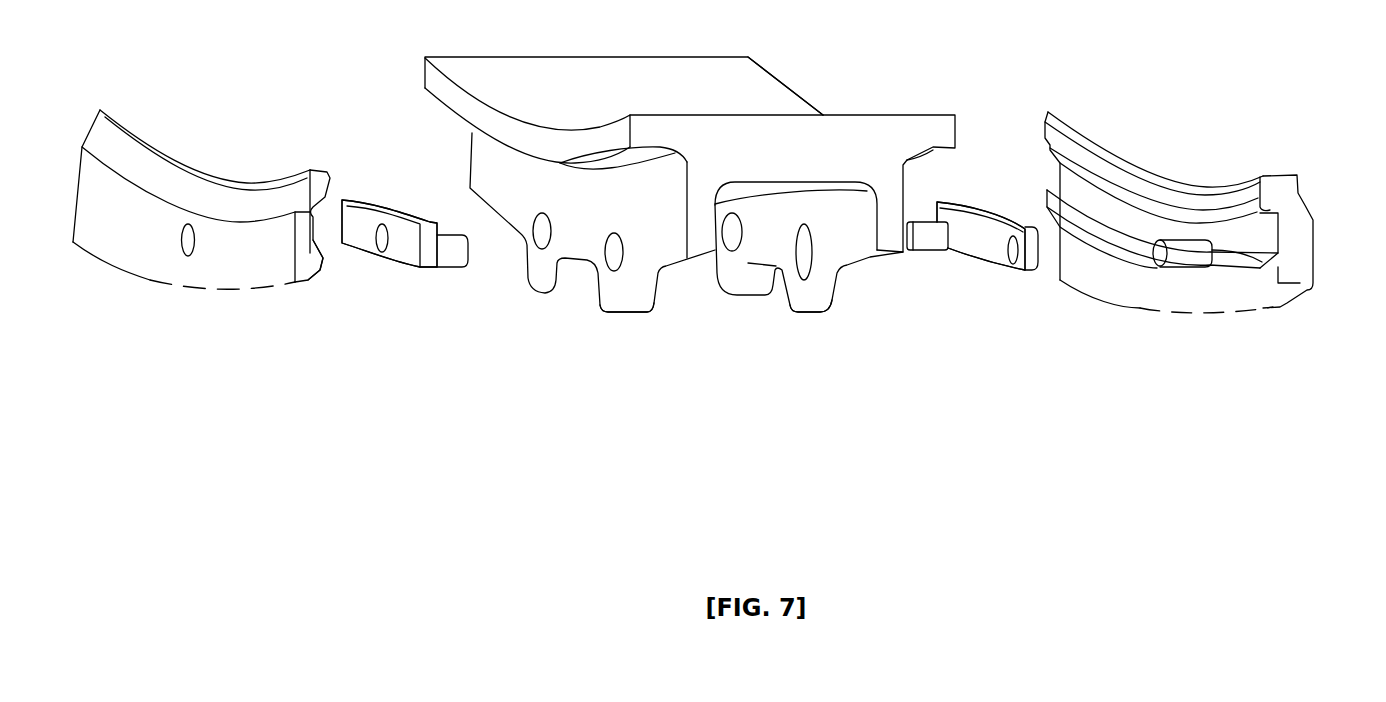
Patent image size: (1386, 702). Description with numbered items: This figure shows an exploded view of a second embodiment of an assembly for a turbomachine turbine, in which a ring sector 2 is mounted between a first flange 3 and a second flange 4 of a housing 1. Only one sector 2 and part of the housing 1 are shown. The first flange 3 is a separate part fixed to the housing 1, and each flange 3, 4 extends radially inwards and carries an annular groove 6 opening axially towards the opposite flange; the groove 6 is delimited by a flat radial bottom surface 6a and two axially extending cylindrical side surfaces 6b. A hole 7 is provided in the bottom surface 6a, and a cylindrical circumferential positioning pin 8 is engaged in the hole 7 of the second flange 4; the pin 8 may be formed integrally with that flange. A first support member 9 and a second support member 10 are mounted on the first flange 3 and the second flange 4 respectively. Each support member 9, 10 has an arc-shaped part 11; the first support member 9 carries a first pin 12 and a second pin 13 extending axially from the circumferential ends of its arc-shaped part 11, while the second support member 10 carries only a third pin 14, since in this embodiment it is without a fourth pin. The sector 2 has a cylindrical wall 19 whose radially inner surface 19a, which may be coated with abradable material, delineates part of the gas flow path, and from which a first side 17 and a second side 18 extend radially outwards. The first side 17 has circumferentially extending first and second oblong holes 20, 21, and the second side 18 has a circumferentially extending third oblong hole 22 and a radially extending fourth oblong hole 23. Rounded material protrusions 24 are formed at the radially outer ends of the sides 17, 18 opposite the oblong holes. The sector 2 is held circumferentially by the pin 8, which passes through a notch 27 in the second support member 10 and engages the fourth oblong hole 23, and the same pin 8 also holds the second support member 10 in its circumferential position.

The housing 1 is at (1161, 184).
The sector 2 is at (672, 206).
The first flange 3 is at (163, 190).
The second flange 4 is at (1103, 147).
The annular groove 6 is at (313, 240).
The bottom surface 6a is at (1263, 235).
The side surface 6b is at (1277, 207).
The hole 7 is at (1235, 257).
The circumferential positioning pin 8 is at (1183, 255).
The first support member 9 is at (408, 220).
The second support member 10 is at (972, 216).
The arc-shaped part 11 is at (398, 243).
The first pin 12 is at (378, 236).
The second pin 13 is at (450, 255).
The third pin 14 is at (925, 235).
The first side 17 is at (592, 252).
The second side 18 is at (809, 277).
The cylindrical wall 19 is at (445, 95).
The radially inner surface 19a is at (767, 98).
The first oblong hole 20 is at (543, 240).
The second oblong hole 21 is at (613, 267).
The third oblong hole 22 is at (733, 240).
The fourth oblong hole 23 is at (803, 273).
The rounded material protrusion 24 is at (635, 298).
The notch 27 is at (1013, 267).